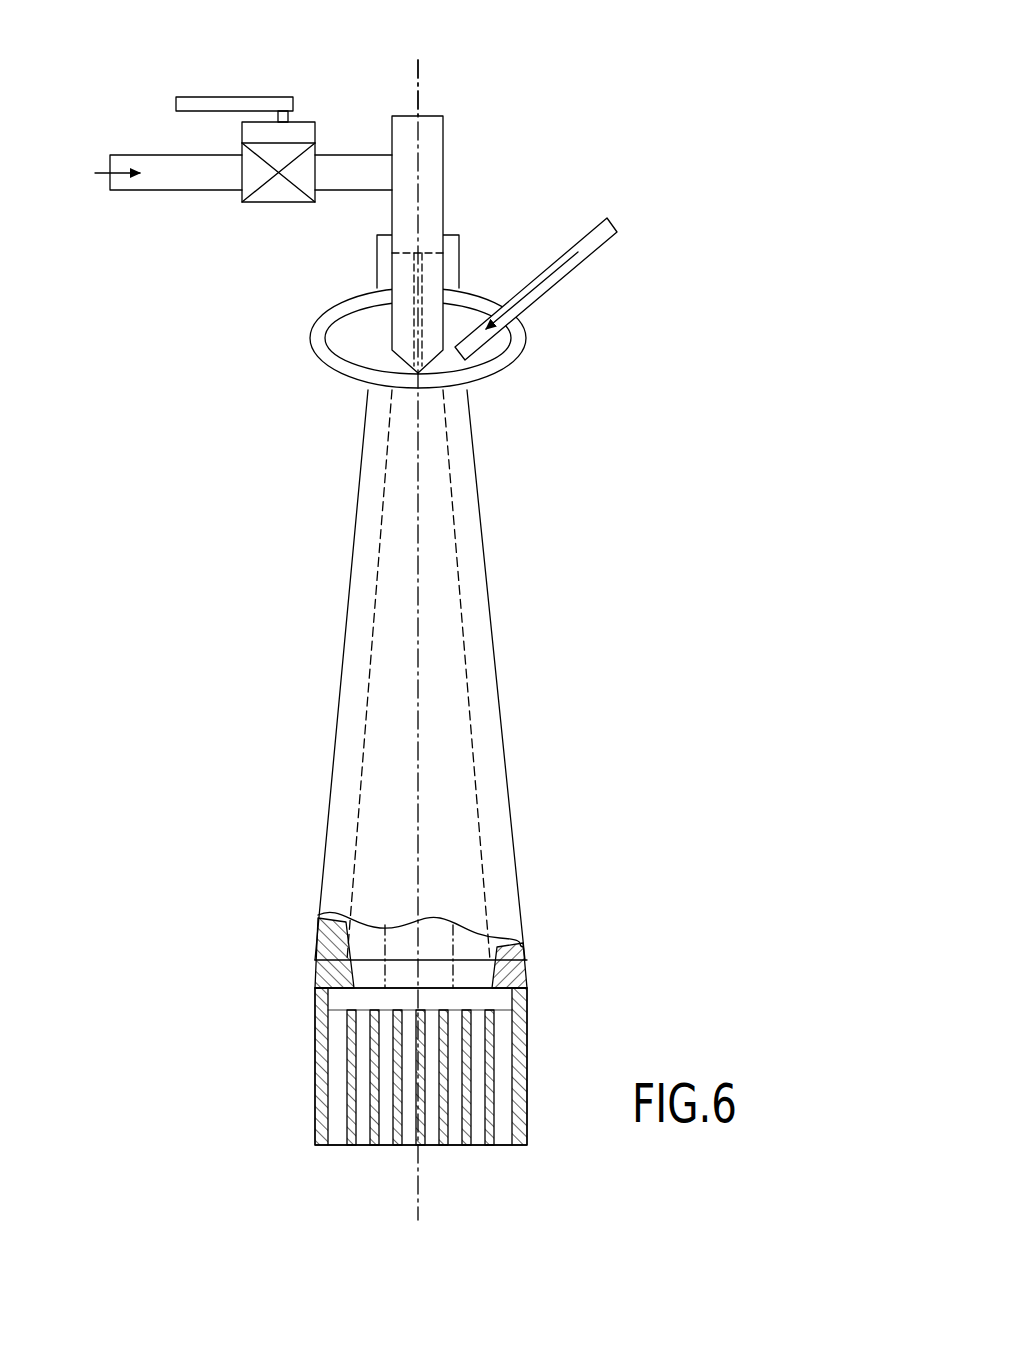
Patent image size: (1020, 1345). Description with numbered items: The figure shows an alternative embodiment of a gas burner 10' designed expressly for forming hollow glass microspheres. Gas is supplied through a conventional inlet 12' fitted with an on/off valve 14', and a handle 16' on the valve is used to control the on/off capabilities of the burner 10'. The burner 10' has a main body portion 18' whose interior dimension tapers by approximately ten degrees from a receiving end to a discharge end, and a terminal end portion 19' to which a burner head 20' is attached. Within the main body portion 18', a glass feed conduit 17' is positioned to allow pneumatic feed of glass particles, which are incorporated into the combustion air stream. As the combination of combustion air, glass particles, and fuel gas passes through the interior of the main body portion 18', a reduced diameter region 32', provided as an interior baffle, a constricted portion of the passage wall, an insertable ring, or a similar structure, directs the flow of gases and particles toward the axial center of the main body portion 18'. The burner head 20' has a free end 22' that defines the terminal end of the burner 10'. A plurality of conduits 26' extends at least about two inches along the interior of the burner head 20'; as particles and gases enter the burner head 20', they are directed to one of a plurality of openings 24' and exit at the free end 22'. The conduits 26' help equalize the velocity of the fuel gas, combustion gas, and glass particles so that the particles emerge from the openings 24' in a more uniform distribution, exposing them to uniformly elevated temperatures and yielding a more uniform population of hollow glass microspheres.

The gas burner 10' is at (506, 266).
The inlet 12' is at (223, 133).
The on/off valve 14' is at (253, 203).
The handle 16' is at (234, 70).
The glass feed conduit 17' is at (566, 264).
The main body portion 18' is at (463, 689).
The terminal end portion 19' is at (452, 945).
The burner head 20' is at (370, 1066).
The free end 22' is at (468, 1178).
The openings 24' is at (479, 991).
The conduits 26' is at (352, 1072).
The reduced diameter region 32' is at (299, 931).